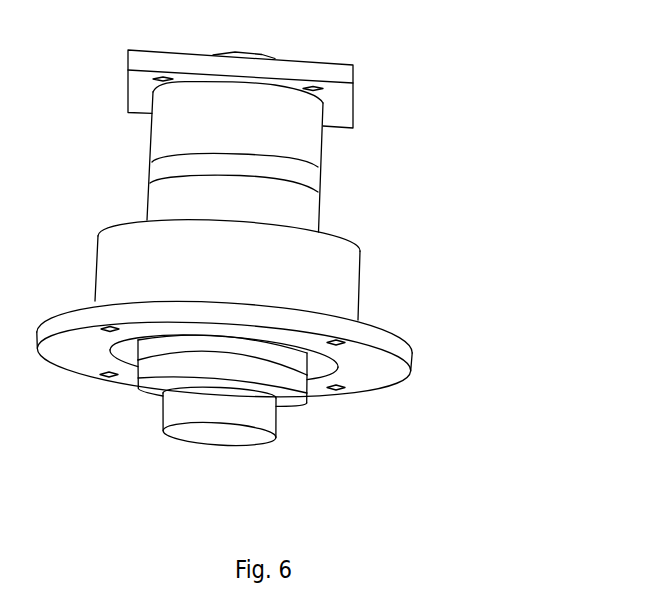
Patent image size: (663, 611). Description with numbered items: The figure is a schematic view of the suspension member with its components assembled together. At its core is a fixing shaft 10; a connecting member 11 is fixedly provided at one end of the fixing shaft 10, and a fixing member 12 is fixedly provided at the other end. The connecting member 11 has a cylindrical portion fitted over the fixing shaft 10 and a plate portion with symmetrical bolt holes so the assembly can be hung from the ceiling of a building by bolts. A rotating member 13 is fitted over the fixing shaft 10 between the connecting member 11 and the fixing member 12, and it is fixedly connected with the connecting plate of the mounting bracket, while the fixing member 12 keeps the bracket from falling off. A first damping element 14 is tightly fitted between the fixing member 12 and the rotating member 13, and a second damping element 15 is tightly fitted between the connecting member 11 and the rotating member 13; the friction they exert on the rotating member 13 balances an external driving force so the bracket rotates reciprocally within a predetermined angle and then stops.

The fixing shaft 10 is at (222, 445).
The connecting member 11 is at (320, 63).
The fixing member 12 is at (282, 393).
The rotating member 13 is at (362, 249).
The first damping element 14 is at (163, 350).
The second damping element 15 is at (310, 180).